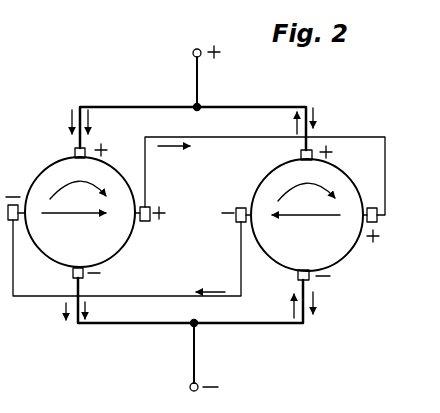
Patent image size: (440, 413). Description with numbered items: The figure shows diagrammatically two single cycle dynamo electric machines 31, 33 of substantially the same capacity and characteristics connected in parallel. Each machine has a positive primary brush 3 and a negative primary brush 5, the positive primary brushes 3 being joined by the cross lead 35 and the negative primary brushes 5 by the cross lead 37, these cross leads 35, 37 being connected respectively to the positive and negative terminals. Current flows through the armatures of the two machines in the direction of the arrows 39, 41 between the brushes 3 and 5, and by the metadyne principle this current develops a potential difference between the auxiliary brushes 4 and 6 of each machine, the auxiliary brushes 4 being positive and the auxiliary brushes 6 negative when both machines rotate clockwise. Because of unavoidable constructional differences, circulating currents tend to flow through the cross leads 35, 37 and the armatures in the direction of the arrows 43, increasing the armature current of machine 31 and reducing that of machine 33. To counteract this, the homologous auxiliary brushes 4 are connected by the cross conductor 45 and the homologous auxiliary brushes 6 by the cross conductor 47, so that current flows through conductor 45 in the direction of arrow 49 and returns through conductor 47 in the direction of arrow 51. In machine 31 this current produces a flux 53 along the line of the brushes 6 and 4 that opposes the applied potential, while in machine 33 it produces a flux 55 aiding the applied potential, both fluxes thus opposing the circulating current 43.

The positive primary brush 3 is at (193, 163).
The auxiliary brush 4 is at (246, 216).
The negative primary brush 5 is at (191, 266).
The auxiliary brush 6 is at (136, 214).
The dynamo electric machine 31 is at (46, 170).
The dynamo electric machine 33 is at (278, 168).
The cross lead 35 is at (156, 98).
The cross lead 37 is at (150, 323).
The current arrow 39 is at (66, 120).
The current arrow 41 is at (318, 115).
The circulating current arrows 43 is at (90, 120).
The cross conductor 45 is at (234, 137).
The cross conductor 47 is at (158, 288).
The current arrow 49 is at (165, 148).
The current arrow 51 is at (218, 292).
The flux arrow 53 is at (53, 219).
The flux arrow 55 is at (288, 220).